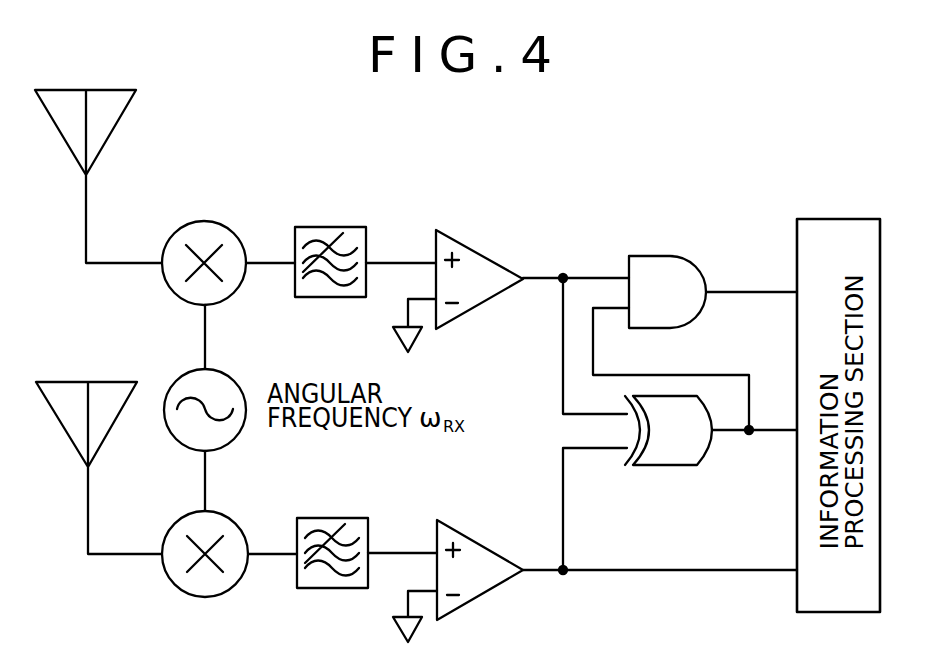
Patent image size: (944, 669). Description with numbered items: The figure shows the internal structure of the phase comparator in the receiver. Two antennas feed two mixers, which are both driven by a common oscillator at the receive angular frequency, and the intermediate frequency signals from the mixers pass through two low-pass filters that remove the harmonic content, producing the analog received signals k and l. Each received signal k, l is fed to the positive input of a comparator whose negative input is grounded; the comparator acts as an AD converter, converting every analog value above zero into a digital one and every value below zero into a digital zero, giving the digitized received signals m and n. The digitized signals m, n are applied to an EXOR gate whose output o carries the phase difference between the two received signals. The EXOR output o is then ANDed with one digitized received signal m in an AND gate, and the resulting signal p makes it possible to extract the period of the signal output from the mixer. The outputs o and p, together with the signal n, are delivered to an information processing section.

The received signal from first low-pass filter k is at (401, 246).
The received signal from second low-pass filter l is at (402, 536).
The digitized received signal m is at (576, 330).
The digitized received signal n is at (660, 526).
The EXOR gate output o is at (754, 443).
The AND gate output p is at (751, 276).